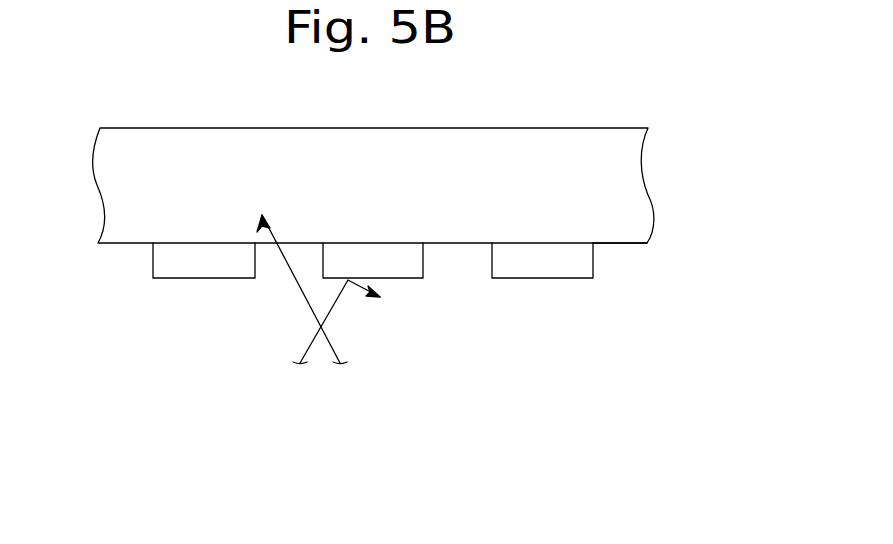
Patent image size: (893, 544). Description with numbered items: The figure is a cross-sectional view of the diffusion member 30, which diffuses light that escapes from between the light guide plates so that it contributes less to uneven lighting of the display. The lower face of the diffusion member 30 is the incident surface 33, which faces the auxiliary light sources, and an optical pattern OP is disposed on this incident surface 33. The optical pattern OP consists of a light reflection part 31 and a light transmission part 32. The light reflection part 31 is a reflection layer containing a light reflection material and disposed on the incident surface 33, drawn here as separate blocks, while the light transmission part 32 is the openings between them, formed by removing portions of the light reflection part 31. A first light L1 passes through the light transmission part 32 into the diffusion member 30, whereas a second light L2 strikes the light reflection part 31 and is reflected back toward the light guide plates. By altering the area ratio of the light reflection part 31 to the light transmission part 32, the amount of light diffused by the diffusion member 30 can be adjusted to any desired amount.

The diffusion member 30 is at (684, 139).
The light reflection part 31 is at (197, 280).
The light transmission part 32 is at (457, 256).
The incident surface 33 is at (610, 246).
The optical pattern OP is at (496, 358).
The first light L1 is at (311, 308).
The second light L2 is at (331, 308).